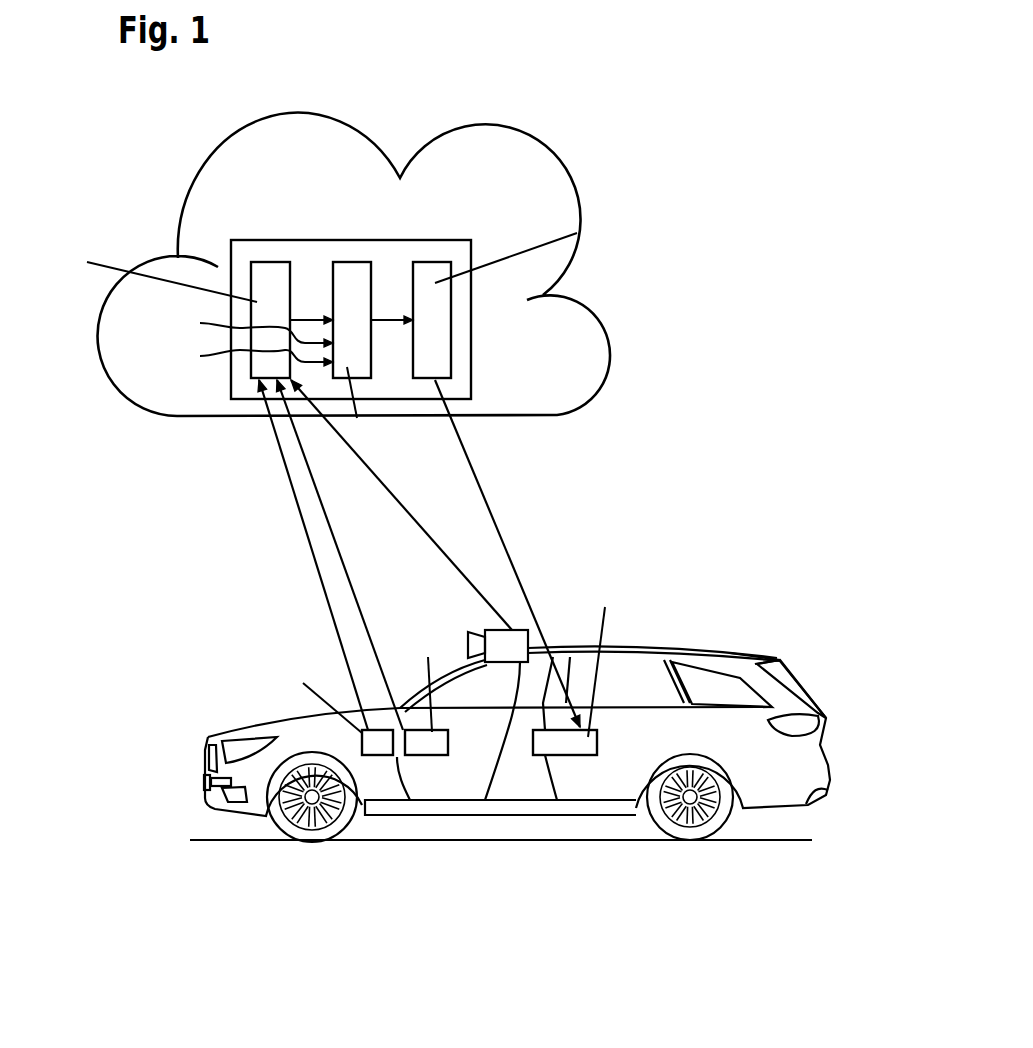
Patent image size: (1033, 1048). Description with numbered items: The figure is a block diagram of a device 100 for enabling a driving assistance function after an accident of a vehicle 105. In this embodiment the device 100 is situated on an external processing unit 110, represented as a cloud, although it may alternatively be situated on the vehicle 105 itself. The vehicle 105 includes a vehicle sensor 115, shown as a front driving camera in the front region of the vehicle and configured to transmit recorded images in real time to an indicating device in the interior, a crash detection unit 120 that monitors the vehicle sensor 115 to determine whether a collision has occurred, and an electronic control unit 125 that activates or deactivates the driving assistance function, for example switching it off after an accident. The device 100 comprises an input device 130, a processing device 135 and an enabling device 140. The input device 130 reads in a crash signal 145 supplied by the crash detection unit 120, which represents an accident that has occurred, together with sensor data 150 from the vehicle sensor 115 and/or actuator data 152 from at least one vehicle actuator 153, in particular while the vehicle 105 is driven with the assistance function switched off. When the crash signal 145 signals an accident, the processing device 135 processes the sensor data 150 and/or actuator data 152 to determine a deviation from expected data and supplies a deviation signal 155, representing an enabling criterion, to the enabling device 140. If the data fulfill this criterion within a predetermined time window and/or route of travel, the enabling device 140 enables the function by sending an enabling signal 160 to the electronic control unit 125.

The device 100 is at (472, 322).
The vehicle 105 is at (693, 647).
The external processing unit 110 is at (608, 322).
The vehicle sensor 115 is at (485, 800).
The crash detection unit 120 is at (380, 755).
The electronic control unit 125 is at (548, 755).
The input device 130 is at (270, 260).
The processing device 135 is at (354, 260).
The enabling device 140 is at (435, 260).
The crash signal 145 is at (308, 537).
The sensor data 150 is at (307, 318).
The actuator data 152 is at (397, 585).
The vehicle actuator 153 is at (425, 755).
The deviation signal 155 is at (385, 316).
The enabling signal 160 is at (502, 536).